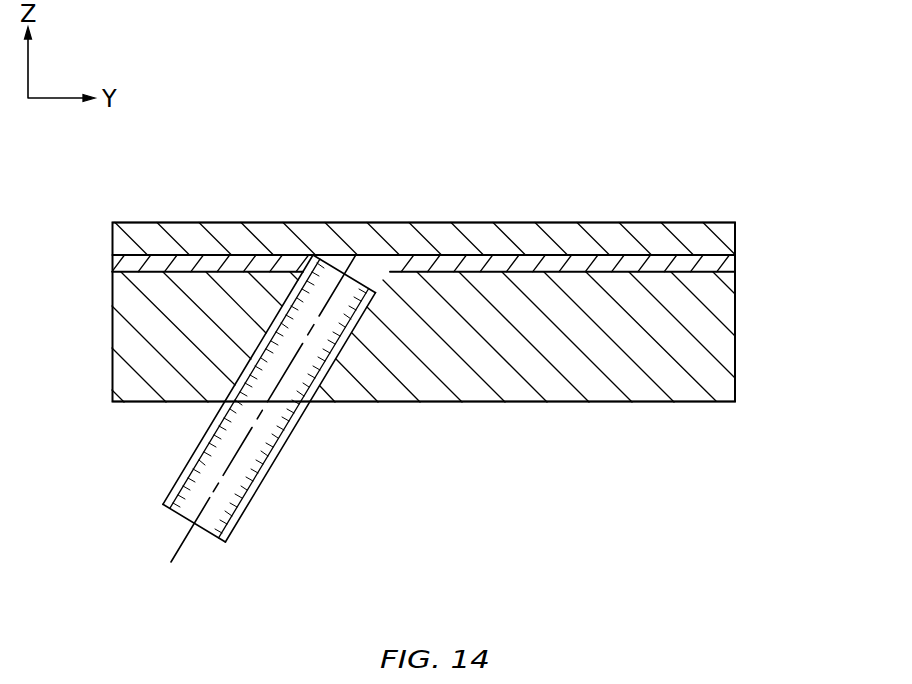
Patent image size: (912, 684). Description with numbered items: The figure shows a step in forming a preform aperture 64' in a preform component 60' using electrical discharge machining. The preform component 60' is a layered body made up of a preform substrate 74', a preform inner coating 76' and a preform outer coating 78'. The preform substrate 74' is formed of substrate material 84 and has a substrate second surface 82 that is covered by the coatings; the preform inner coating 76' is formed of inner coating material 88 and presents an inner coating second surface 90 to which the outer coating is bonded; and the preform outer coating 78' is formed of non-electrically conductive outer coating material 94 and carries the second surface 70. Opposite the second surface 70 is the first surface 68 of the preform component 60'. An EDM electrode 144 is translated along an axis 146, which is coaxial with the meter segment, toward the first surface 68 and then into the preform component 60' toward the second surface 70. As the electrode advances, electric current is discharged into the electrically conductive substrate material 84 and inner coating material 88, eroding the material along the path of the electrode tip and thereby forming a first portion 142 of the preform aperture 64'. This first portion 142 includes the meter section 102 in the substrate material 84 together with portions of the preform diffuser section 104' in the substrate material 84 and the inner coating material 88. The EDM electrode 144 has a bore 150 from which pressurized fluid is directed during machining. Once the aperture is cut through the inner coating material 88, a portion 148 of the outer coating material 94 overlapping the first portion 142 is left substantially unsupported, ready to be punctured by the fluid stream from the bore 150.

The preform component 60' is at (497, 251).
The preform outer coating 78' is at (373, 239).
The second surface 70 is at (143, 222).
The outer coating material 94 is at (722, 237).
The inner coating second surface 90 is at (188, 256).
The portion of the outer coating material 148 is at (390, 237).
The inner coating material 88 is at (725, 263).
The preform inner coating 76' is at (373, 278).
The substrate second surface 82 is at (210, 262).
The preform substrate 74' is at (373, 337).
The substrate material 84 is at (722, 358).
The first surface 68 is at (142, 403).
The preform aperture 64' is at (252, 340).
The first portion of the preform aperture 142 is at (388, 268).
The preform diffuser section 104' is at (355, 224).
The meter section 102 is at (341, 380).
The EDM electrode 144 is at (255, 502).
The bore 150 is at (187, 502).
The axis 146 is at (175, 556).